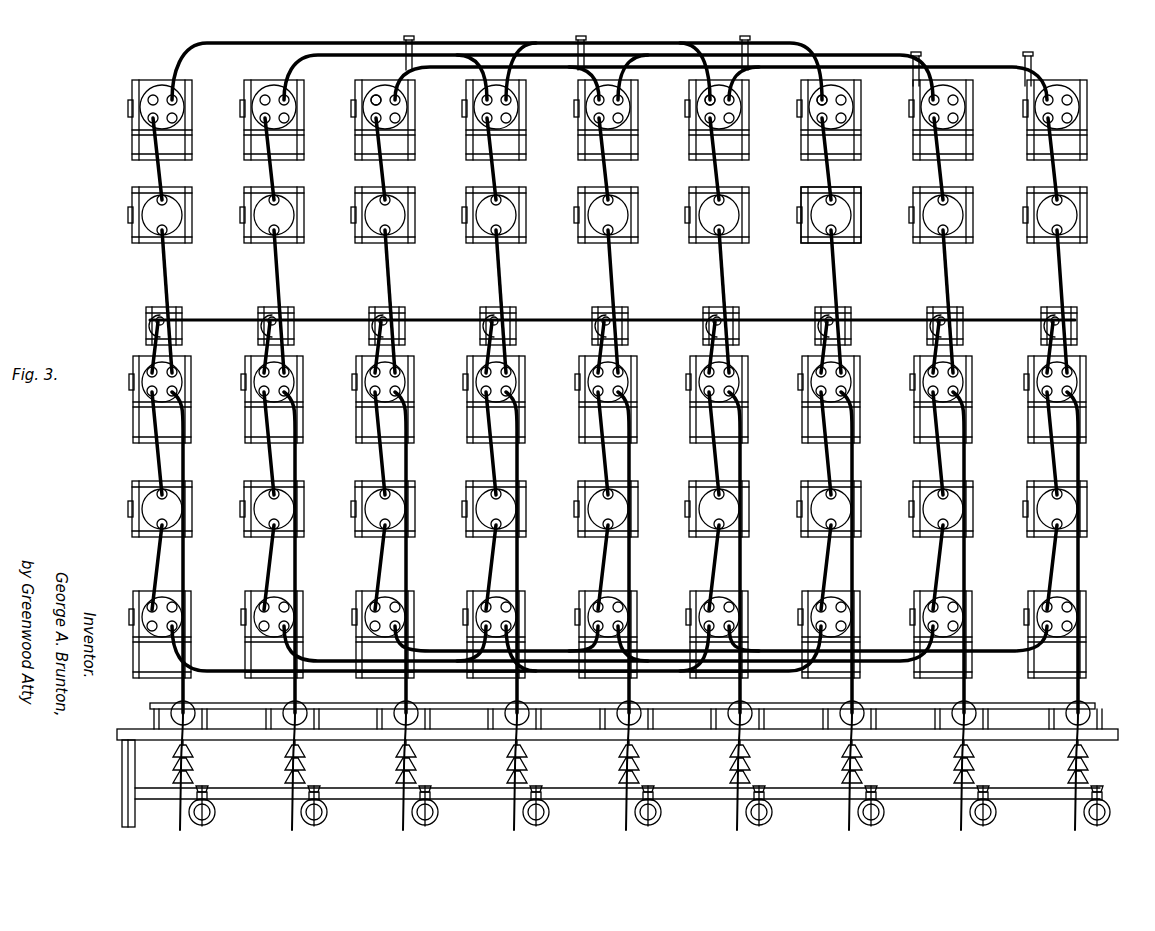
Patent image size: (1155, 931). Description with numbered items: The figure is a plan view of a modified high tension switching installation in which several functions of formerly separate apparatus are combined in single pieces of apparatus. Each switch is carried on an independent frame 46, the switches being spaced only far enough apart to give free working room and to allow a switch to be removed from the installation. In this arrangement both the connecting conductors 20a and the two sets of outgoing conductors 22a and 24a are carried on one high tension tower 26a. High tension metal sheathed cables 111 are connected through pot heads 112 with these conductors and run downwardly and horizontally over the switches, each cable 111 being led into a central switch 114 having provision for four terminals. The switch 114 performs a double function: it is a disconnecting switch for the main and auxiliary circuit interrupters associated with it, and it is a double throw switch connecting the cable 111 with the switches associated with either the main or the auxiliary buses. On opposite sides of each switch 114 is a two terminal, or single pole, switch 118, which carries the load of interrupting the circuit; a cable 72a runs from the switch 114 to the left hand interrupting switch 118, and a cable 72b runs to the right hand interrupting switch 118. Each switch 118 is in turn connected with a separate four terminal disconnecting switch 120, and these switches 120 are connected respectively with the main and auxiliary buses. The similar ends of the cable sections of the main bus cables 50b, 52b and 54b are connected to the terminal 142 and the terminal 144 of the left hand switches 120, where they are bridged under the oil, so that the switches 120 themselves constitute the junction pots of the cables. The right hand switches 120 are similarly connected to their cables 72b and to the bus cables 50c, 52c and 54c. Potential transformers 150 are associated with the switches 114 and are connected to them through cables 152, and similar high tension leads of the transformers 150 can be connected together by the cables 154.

The connecting conductor 20a is at (853, 830).
The outgoing conductor 22a is at (627, 816).
The outgoing conductor 24a is at (186, 831).
The high tension tower 26a is at (362, 738).
The independent frame 46 is at (802, 198).
The main bus cable 50b is at (449, 71).
The main bus cable 52b is at (361, 56).
The main bus cable 54b is at (268, 45).
The bus cable 50c is at (777, 649).
The bus cable 52c is at (881, 658).
The bus cable 54c is at (707, 677).
The cable 72a is at (722, 268).
The cable 72b is at (604, 464).
The high tension metal sheathed cable 111 is at (185, 572).
The pot head 112 is at (286, 704).
The central switch 114 is at (968, 386).
The two terminal switch 118 is at (822, 224).
The four terminal switch 120 is at (500, 119).
The terminal 142 is at (704, 104).
The terminal 144 is at (370, 104).
The potential transformer 150 is at (486, 321).
The cable 152 is at (489, 350).
The cable 154 is at (549, 316).